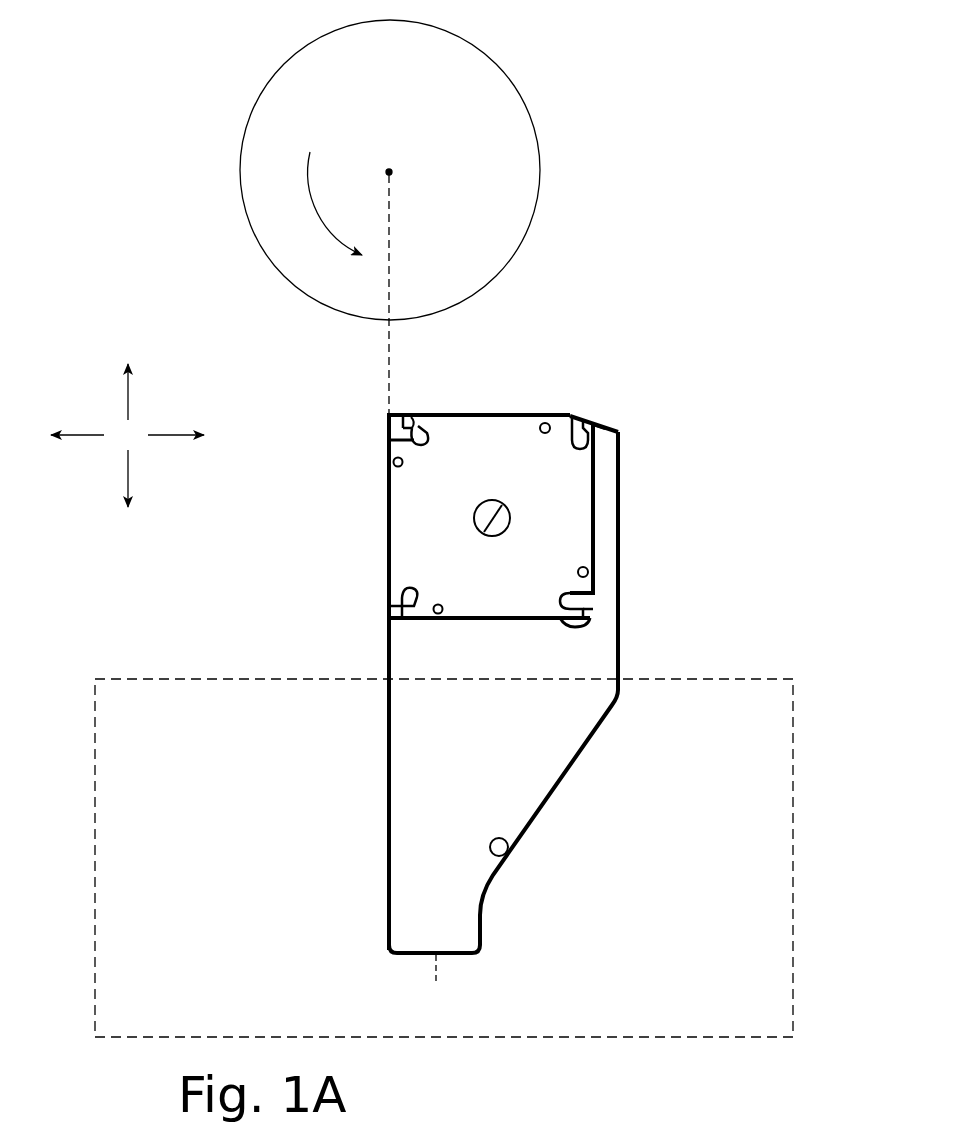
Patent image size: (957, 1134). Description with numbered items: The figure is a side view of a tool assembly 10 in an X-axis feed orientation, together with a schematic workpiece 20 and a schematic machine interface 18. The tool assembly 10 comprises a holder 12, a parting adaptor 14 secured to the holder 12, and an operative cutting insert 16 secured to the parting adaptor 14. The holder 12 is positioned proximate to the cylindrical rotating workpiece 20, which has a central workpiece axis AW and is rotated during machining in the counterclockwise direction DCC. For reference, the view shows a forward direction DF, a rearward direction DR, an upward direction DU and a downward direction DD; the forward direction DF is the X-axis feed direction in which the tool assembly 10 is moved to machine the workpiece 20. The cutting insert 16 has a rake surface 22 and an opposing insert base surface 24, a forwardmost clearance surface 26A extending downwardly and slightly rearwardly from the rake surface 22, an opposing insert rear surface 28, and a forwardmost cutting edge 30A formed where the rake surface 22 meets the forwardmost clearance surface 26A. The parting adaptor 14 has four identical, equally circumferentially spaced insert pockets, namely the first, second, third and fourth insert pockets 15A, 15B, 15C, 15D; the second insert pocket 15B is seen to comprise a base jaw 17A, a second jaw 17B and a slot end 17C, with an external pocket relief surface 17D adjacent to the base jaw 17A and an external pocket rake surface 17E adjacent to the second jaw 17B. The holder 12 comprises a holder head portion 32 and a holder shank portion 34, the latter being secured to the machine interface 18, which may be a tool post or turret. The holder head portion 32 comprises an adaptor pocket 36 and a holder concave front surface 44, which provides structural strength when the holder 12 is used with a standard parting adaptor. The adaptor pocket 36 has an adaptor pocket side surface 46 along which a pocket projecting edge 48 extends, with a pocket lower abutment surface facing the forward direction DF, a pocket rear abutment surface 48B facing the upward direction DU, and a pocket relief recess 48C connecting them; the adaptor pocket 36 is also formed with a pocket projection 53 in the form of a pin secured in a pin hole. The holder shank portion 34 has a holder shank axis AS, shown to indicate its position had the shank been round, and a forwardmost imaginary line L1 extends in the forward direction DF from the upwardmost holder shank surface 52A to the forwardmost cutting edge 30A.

The tool assembly 10 is at (623, 345).
The holder 12 is at (623, 691).
The parting adaptor 14 is at (387, 517).
The first insert pocket 15A is at (430, 439).
The second insert pocket 15B is at (582, 419).
The third insert pocket 15C is at (556, 596).
The fourth insert pocket 15D is at (392, 612).
The cutting insert 16 is at (394, 406).
The base jaw 17A is at (604, 441).
The second jaw 17B is at (572, 420).
The slot end 17C is at (600, 452).
The external pocket relief surface 17D is at (406, 418).
The external pocket rake surface 17E is at (387, 453).
The machine interface 18 is at (132, 677).
The workpiece 20 is at (500, 62).
The rake surface 22 is at (387, 419).
The insert base surface 24 is at (413, 421).
The forwardmost clearance surface 26A is at (400, 412).
The insert rear surface 28 is at (403, 469).
The forwardmost cutting edge 30A is at (387, 416).
The holder head portion 32 is at (297, 575).
The holder shank portion 34 is at (257, 845).
The adaptor pocket 36 is at (590, 603).
The holder concave front surface 44 is at (504, 508).
The adaptor pocket side surface 46 is at (505, 528).
The pocket projecting edge 48 is at (597, 527).
The pocket rear abutment surface 48B is at (545, 622).
The pocket relief recess 48C is at (601, 578).
The upwardmost holder shank surface 52A is at (388, 800).
The pocket projection 53 is at (396, 632).
The workpiece axis AW is at (395, 168).
The forwardmost imaginary line L1 is at (392, 226).
The counterclockwise direction DCC is at (307, 203).
The holder shank axis AS is at (434, 982).
The forward direction DF is at (108, 392).
The rearward direction DR is at (108, 478).
The upward direction DU is at (76, 416).
The downward direction DD is at (176, 416).